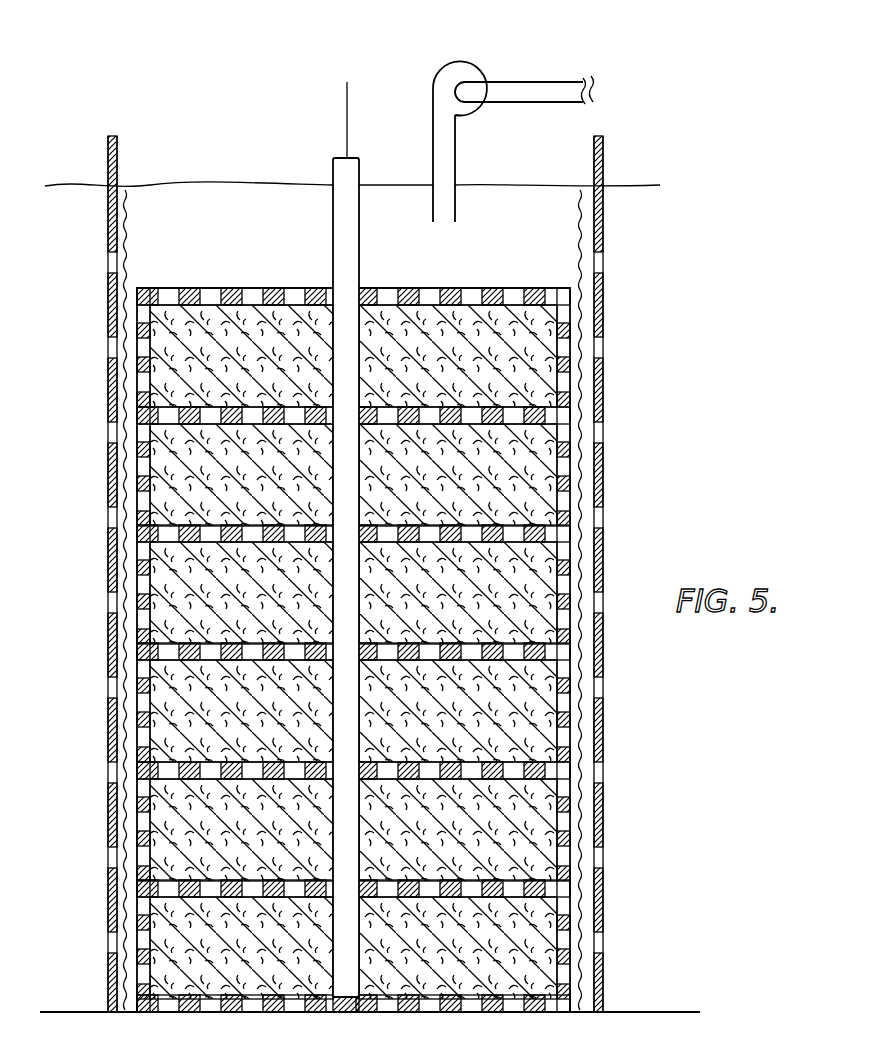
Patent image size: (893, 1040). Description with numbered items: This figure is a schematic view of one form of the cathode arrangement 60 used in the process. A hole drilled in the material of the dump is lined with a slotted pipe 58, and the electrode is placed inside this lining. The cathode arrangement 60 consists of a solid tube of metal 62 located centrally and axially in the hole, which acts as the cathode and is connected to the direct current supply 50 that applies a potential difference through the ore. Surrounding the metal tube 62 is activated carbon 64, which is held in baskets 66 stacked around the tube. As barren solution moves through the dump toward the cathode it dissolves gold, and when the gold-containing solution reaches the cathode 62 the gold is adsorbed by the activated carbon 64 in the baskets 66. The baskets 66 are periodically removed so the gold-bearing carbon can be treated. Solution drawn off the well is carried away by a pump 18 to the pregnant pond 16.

The pregnant pond 16 is at (610, 92).
The pump 18 is at (447, 88).
The direct current supply 50 is at (347, 82).
The slotted pipe 58 is at (107, 803).
The cathode arrangement 60 is at (418, 650).
The solid tube of metal 62 is at (333, 219).
The activated carbon 64 is at (185, 605).
The baskets 66 is at (567, 348).